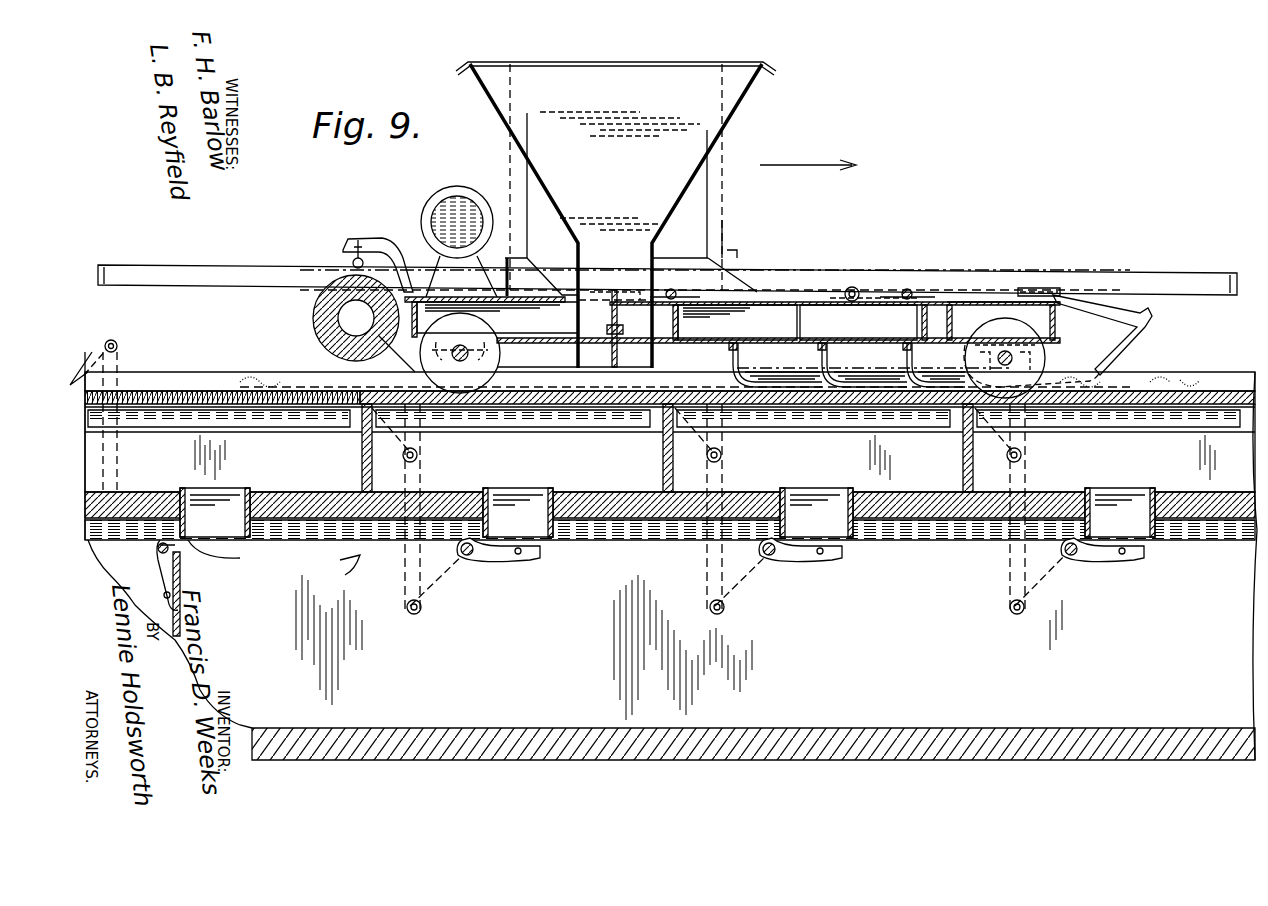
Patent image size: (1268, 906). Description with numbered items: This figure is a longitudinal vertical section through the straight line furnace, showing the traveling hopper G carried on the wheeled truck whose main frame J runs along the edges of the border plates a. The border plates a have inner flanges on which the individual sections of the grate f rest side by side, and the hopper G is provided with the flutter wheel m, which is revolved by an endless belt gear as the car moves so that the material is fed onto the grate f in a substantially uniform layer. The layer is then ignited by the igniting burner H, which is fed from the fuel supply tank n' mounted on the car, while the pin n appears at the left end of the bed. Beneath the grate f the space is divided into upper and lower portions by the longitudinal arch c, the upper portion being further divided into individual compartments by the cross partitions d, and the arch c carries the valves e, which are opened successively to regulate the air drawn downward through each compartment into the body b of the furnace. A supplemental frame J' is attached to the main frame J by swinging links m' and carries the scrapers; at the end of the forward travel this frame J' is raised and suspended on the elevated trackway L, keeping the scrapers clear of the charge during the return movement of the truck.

The traveling hopper G is at (616, 215).
The elevated trackway L is at (828, 273).
The truck main frame J is at (732, 345).
The supplemental frame J' is at (835, 321).
The fuel supply tank n' is at (447, 241).
The pivot pin n is at (93, 438).
The igniting burner H is at (322, 306).
The flutter wheel m is at (615, 328).
The swinging links m' is at (873, 286).
The grate surface f is at (215, 385).
The border plates a is at (670, 448).
The cross partitions d is at (653, 448).
The longitudinal arch c is at (612, 504).
The valves e is at (667, 531).
The body b is at (672, 566).